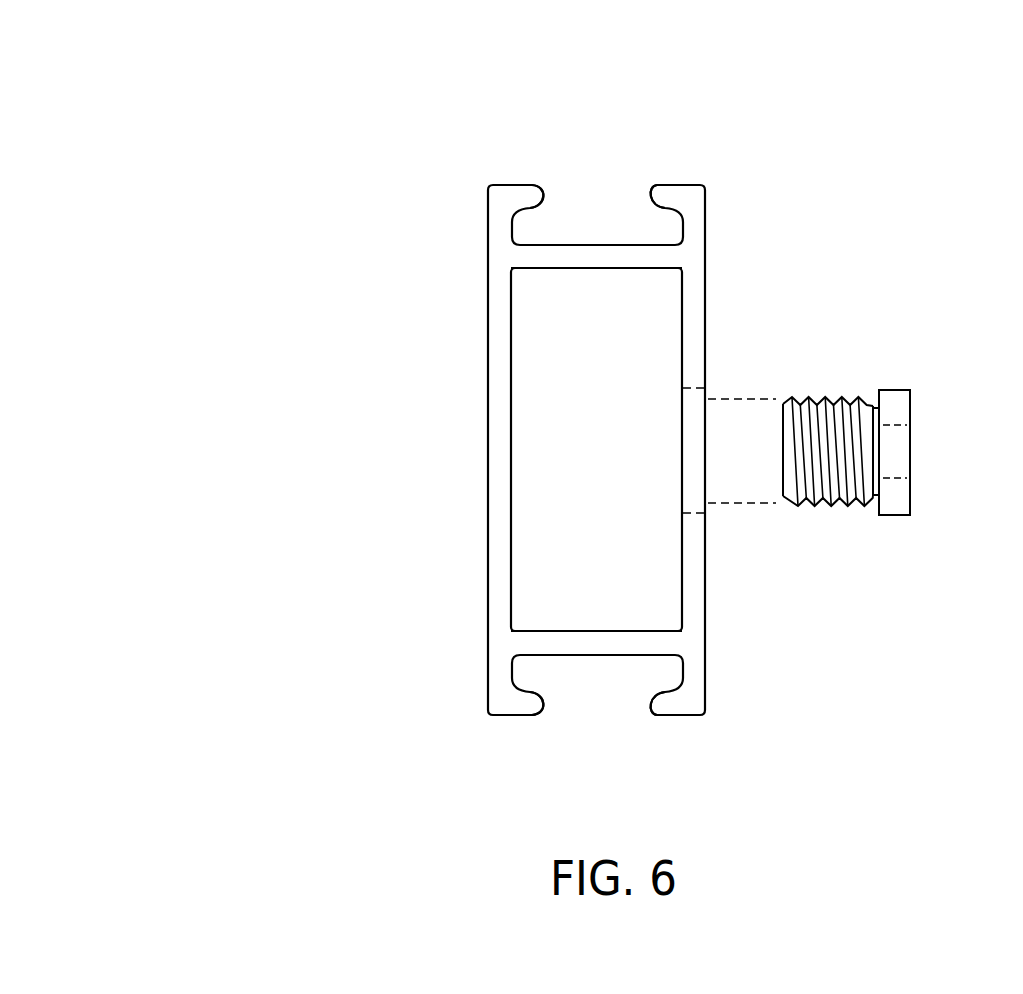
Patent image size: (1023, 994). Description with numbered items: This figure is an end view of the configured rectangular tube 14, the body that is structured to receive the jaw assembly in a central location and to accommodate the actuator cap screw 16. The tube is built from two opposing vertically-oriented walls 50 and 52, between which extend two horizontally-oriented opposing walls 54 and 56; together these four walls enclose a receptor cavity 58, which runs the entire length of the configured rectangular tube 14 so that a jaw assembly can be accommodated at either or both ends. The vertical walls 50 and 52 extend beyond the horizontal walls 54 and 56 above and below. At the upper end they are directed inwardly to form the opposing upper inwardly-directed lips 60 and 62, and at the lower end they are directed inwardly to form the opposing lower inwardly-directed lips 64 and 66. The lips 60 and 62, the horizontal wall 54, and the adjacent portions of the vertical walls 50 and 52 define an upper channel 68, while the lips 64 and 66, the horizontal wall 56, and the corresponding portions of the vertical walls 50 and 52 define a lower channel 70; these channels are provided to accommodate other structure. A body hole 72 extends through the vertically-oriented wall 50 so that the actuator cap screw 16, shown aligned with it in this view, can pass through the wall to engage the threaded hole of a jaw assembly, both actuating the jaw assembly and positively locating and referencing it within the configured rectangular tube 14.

The configured rectangular tube 14 is at (352, 144).
The actuator cap screw 16 is at (910, 408).
The vertically-oriented wall 50 is at (693, 565).
The vertically-oriented wall 52 is at (500, 530).
The horizontally-oriented wall 54 is at (613, 255).
The horizontally-oriented wall 56 is at (612, 645).
The receptor cavity 58 is at (610, 462).
The upper inwardly-directed lip 60 is at (532, 195).
The upper inwardly-directed lip 62 is at (668, 197).
The lower inwardly-directed lip 64 is at (530, 703).
The lower inwardly-directed lip 66 is at (665, 703).
The upper channel 68 is at (587, 223).
The lower channel 70 is at (585, 677).
The body hole 72 is at (693, 388).